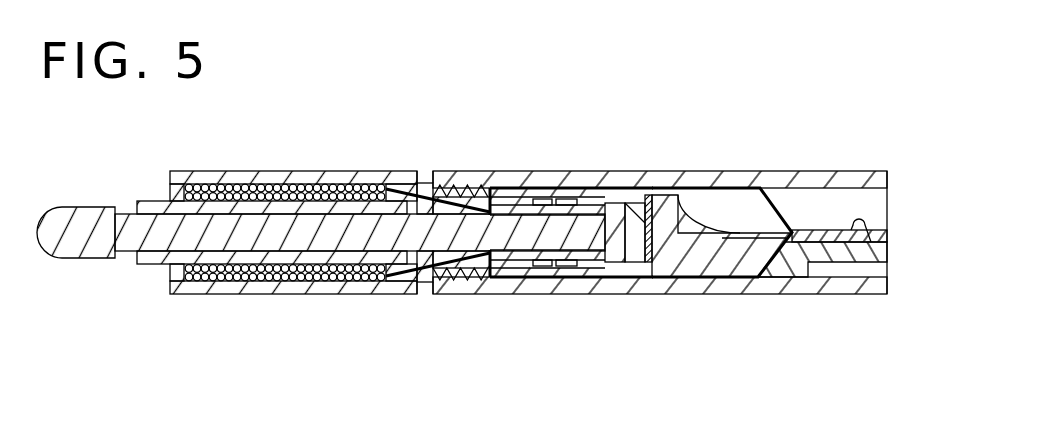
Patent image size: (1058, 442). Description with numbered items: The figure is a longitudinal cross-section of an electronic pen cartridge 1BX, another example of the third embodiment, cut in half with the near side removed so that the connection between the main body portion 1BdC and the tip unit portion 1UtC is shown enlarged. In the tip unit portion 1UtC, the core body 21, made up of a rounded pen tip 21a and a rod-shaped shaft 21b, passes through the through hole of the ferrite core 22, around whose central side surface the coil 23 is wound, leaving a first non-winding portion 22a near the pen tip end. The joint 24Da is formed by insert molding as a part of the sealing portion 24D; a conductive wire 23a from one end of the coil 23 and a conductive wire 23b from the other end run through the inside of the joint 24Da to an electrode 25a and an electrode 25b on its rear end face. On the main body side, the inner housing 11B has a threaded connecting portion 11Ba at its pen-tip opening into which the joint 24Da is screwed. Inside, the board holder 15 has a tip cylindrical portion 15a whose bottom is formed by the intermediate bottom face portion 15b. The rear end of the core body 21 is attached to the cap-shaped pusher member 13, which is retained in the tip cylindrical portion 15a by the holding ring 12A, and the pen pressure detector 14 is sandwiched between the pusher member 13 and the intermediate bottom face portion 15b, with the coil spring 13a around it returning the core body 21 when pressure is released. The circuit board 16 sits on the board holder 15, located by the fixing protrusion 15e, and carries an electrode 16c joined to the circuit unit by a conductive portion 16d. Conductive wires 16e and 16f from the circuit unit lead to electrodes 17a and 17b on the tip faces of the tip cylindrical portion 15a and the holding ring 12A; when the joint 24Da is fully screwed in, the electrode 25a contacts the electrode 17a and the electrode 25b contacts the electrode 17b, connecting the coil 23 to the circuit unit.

The electronic pen cartridge 1BX is at (307, 123).
The tip unit portion 1UtC is at (273, 355).
The main body portion 1BdC is at (733, 360).
The inner housing 11B is at (856, 170).
The connecting portion 11Ba is at (462, 181).
The holding ring 12A is at (535, 190).
The pusher member 13 is at (600, 187).
The coil spring 13a is at (566, 197).
The pen pressure detector 14 is at (647, 262).
The board holder 15 is at (840, 244).
The tip cylindrical portion 15a is at (580, 278).
The intermediate bottom face portion 15b is at (670, 243).
The fixing protrusion 15e is at (861, 240).
The circuit board 16 is at (803, 233).
The electrode 16c is at (650, 189).
The conductive portion 16d is at (703, 200).
The conductive wire 16e is at (784, 212).
The conductive wire 16f is at (784, 250).
The electrode 17a is at (509, 196).
The electrode 17b is at (505, 281).
The core body 21 is at (210, 348).
The pen tip 21a is at (83, 244).
The shaft 21b is at (193, 275).
The ferrite core 22 is at (253, 264).
The first non-winding portion 22a is at (150, 200).
The coil 23 is at (326, 200).
The conductive wire 23a is at (400, 186).
The conductive wire 23b is at (400, 273).
The sealing portion 24D is at (243, 181).
The joint 24Da is at (468, 282).
The electrode 25a is at (473, 190).
The electrode 25b is at (476, 270).